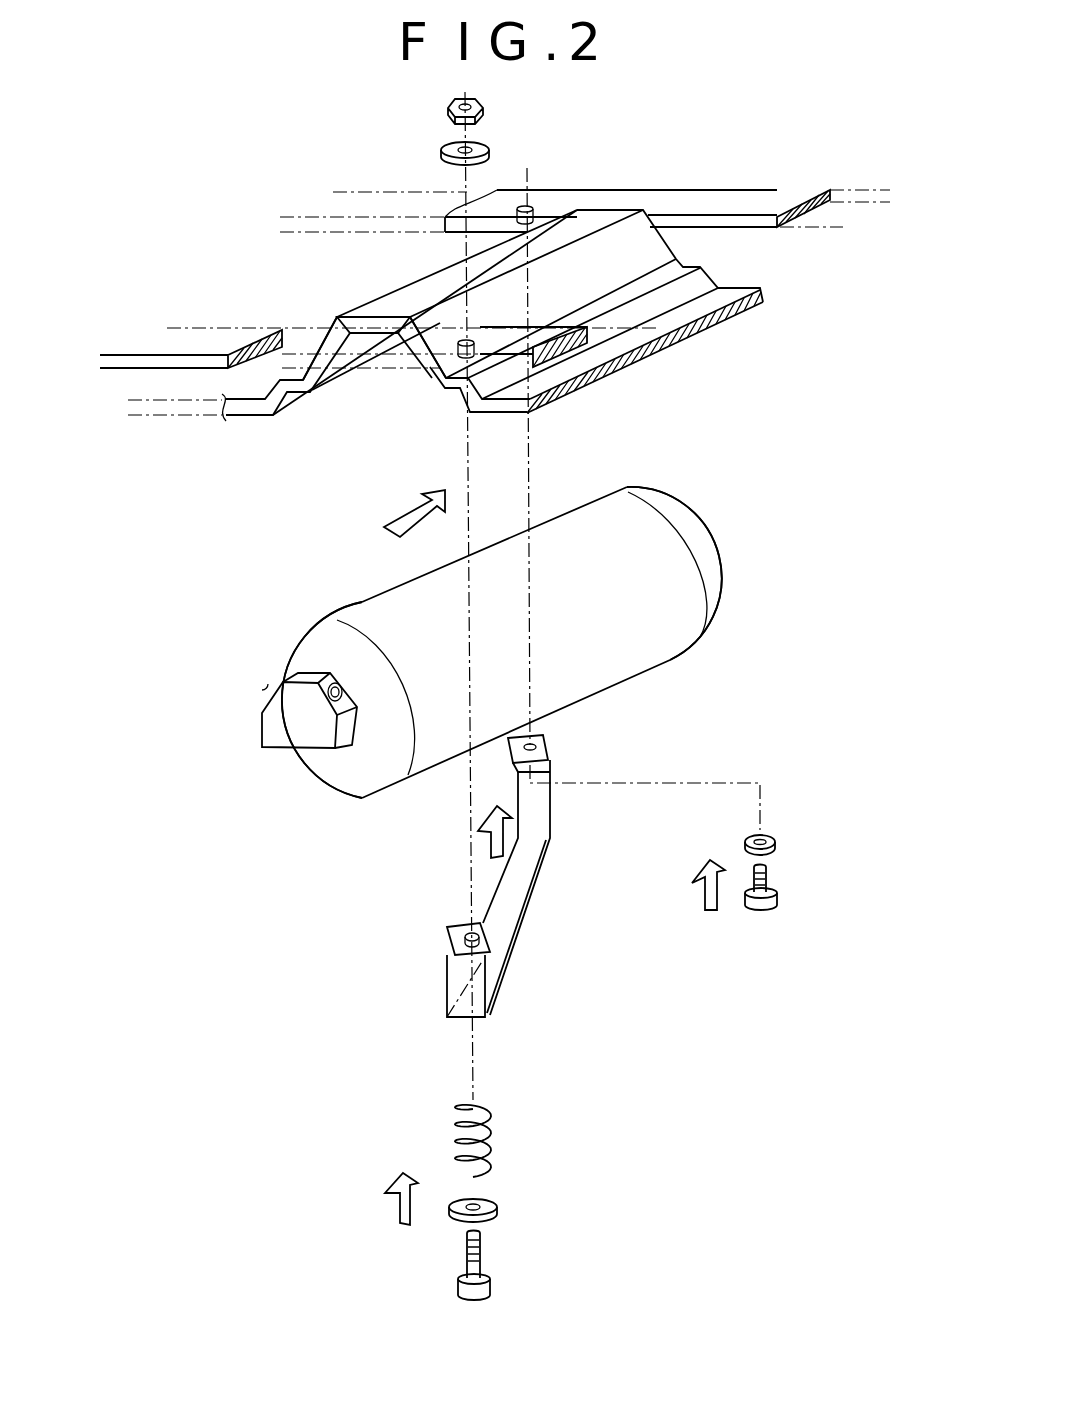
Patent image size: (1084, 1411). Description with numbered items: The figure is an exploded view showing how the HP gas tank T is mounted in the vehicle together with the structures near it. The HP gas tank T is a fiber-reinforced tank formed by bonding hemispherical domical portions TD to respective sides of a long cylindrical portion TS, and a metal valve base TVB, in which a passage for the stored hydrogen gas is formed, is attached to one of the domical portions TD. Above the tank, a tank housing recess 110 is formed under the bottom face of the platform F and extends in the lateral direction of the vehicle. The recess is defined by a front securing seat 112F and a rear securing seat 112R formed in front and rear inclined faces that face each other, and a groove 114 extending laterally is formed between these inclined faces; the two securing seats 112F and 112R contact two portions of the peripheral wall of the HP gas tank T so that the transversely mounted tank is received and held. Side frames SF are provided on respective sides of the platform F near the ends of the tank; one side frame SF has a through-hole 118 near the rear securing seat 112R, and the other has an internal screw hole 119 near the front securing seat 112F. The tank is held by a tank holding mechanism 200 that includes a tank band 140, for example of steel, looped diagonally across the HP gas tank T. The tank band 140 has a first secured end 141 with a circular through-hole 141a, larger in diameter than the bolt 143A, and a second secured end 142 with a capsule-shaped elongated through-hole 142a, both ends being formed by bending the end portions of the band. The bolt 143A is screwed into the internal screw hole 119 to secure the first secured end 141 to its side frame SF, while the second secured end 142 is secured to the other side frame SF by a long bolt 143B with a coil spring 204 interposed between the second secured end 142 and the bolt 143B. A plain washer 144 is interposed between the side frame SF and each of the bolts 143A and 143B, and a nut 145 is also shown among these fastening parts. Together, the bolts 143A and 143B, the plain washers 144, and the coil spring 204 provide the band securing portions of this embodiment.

The tank housing recess 110 is at (390, 382).
The front securing seat 112F is at (333, 373).
The rear securing seat 112R is at (417, 370).
The groove 114 is at (383, 338).
The through-hole 118 is at (473, 340).
The internal screw hole 119 is at (535, 206).
The tank band 140 is at (509, 817).
The first secured end 141 is at (580, 692).
The through-hole 141a is at (533, 742).
The second secured end 142 is at (427, 947).
The through-hole 142a is at (465, 928).
The bolt 143A is at (770, 877).
The long bolt 143B is at (487, 1296).
The plain washer 144 is at (442, 153).
The nut 145 is at (445, 112).
The tank holding mechanism 200 is at (268, 957).
The coil spring 204 is at (490, 1122).
The side frame SF is at (207, 333).
The platform F is at (587, 216).
The HP gas tank T is at (465, 669).
The domical portion TD is at (713, 600).
The cylindrical portion TS is at (647, 648).
The valve base TVB is at (272, 725).